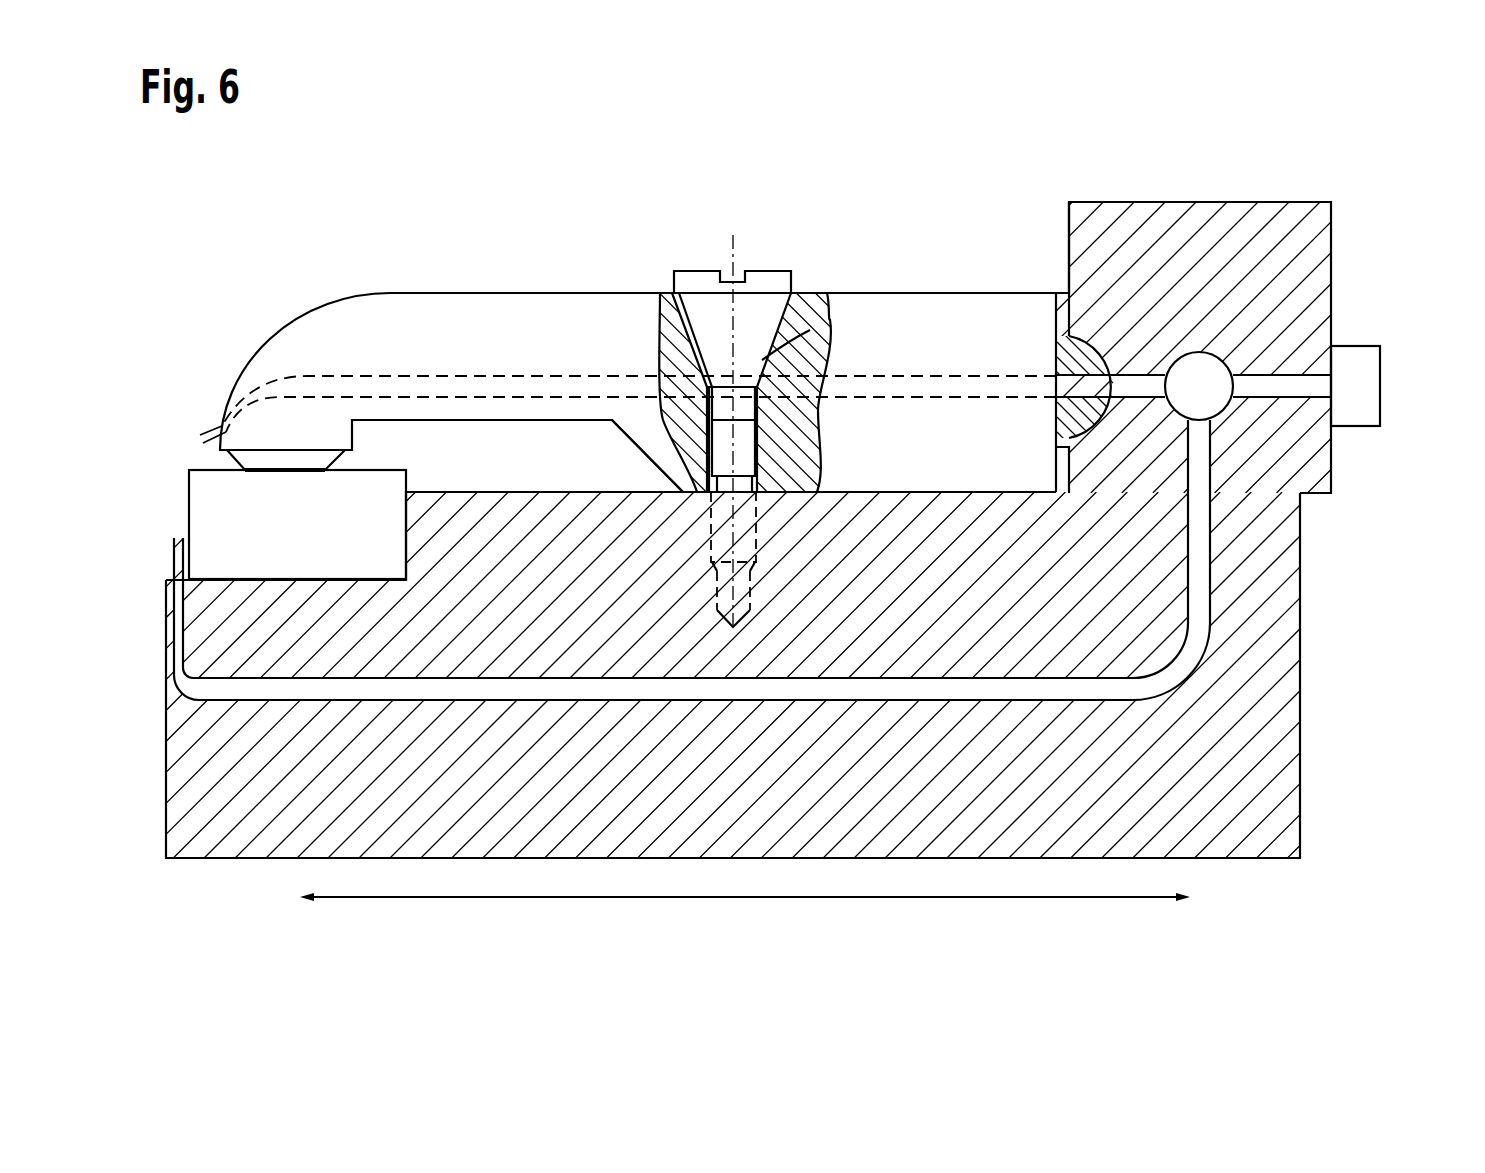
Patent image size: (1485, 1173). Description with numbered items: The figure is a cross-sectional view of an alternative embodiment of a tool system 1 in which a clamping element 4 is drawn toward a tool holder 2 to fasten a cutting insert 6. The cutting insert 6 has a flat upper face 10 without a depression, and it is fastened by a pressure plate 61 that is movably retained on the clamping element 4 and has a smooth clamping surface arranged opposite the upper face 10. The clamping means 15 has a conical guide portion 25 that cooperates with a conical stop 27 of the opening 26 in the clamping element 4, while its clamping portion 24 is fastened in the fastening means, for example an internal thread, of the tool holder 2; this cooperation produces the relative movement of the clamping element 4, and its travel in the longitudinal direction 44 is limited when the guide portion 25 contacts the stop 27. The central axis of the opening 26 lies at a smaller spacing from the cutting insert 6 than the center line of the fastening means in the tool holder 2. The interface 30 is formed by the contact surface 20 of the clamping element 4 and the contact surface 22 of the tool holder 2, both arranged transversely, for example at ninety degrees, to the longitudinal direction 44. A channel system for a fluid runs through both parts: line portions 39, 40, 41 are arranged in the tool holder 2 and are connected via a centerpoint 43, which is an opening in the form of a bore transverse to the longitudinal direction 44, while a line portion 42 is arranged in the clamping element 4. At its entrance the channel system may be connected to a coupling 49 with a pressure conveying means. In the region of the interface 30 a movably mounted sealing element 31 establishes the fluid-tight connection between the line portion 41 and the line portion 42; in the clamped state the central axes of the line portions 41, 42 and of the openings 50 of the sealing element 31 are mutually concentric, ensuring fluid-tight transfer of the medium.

The tool system 1 is at (352, 178).
The tool holder 2 is at (970, 798).
The clamping element 4 is at (547, 346).
The cutting insert 6 is at (202, 509).
The upper face 10 is at (360, 470).
The clamping means 15 is at (768, 270).
The contact surface 20 is at (1069, 310).
The contact surface 22 is at (1069, 236).
The clamping portion 24 is at (708, 527).
The guide portion 25 is at (697, 357).
The opening 26 is at (664, 278).
The stop 27 is at (812, 268).
The interface 30 is at (1053, 277).
The sealing element 31 is at (1067, 363).
The line portion 39 is at (1283, 387).
The line portion 40 is at (1200, 557).
The line portion 41 is at (1147, 387).
The line portion 42 is at (468, 388).
The centerpoint 43 is at (1205, 372).
The longitudinal direction 44 is at (710, 900).
The coupling 49 is at (1380, 386).
The opening 50 is at (1095, 387).
The pressure plate 61 is at (253, 458).